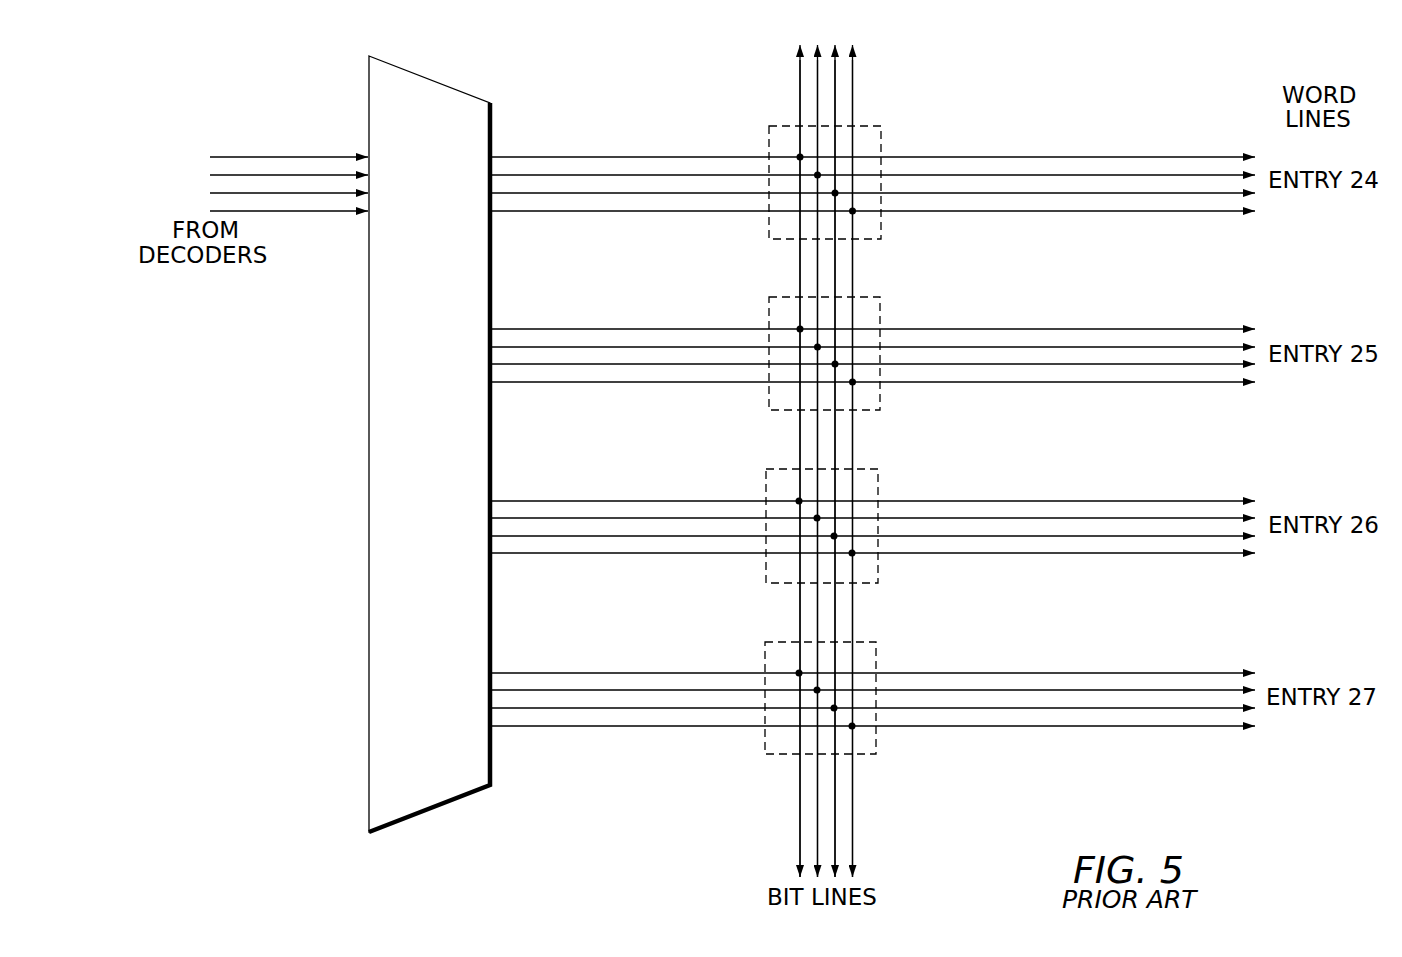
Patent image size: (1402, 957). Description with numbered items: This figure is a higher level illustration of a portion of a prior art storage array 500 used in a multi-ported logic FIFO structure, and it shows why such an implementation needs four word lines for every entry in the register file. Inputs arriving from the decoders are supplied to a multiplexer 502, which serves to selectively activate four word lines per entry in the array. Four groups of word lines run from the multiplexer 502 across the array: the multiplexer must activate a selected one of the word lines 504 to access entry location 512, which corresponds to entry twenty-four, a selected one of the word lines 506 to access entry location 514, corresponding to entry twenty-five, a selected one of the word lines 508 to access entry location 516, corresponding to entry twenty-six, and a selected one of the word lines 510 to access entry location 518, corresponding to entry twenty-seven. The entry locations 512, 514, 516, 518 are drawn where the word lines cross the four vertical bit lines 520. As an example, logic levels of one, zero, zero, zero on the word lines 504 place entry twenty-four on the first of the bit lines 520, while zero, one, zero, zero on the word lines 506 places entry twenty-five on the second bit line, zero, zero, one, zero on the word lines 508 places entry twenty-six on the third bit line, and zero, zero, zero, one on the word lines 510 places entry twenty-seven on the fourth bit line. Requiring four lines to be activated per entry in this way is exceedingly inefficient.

The storage array 500 is at (564, 866).
The multiplexer 502 is at (447, 83).
The word lines 504 is at (1155, 131).
The word lines 506 is at (1155, 303).
The word lines 508 is at (1153, 476).
The word lines 510 is at (1153, 648).
The entry location 512 is at (868, 126).
The entry location 514 is at (868, 297).
The entry location 516 is at (864, 469).
The entry location 518 is at (864, 642).
The bit lines 520 is at (875, 826).